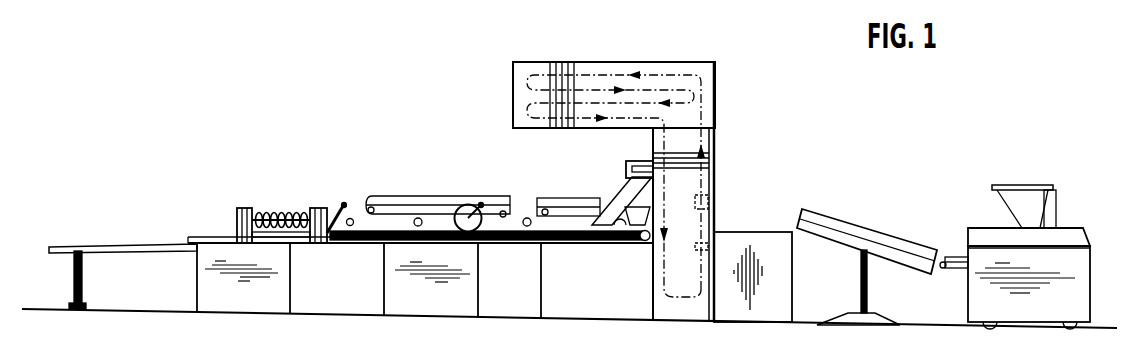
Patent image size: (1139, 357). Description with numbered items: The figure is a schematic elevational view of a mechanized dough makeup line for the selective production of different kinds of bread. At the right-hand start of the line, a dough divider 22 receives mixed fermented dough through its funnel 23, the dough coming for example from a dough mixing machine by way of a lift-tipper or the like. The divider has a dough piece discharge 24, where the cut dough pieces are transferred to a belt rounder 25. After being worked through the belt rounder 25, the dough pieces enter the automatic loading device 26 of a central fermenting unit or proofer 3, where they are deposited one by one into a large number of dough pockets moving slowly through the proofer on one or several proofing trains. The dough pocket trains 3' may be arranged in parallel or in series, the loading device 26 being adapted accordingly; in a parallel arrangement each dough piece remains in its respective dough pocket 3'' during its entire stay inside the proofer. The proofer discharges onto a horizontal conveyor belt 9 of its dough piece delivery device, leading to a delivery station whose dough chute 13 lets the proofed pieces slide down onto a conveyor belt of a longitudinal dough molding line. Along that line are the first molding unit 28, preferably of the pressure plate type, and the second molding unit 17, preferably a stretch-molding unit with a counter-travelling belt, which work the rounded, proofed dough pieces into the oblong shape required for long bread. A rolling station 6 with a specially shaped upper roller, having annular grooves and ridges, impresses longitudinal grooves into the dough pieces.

The proofer 3 is at (641, 182).
The dough pocket trains 3' is at (616, 160).
The dough pocket 3'' is at (729, 193).
The rolling station 6 is at (270, 212).
The horizontal conveyor belt 9 is at (647, 158).
The dough chute 13 is at (620, 198).
The second molding unit 17 is at (404, 197).
The dough divider 22 is at (1092, 252).
The funnel 23 is at (1012, 185).
The dough piece discharge 24 is at (950, 250).
The belt rounder 25 is at (860, 222).
The automatic loading device 26 is at (735, 232).
The first molding unit 28 is at (552, 203).